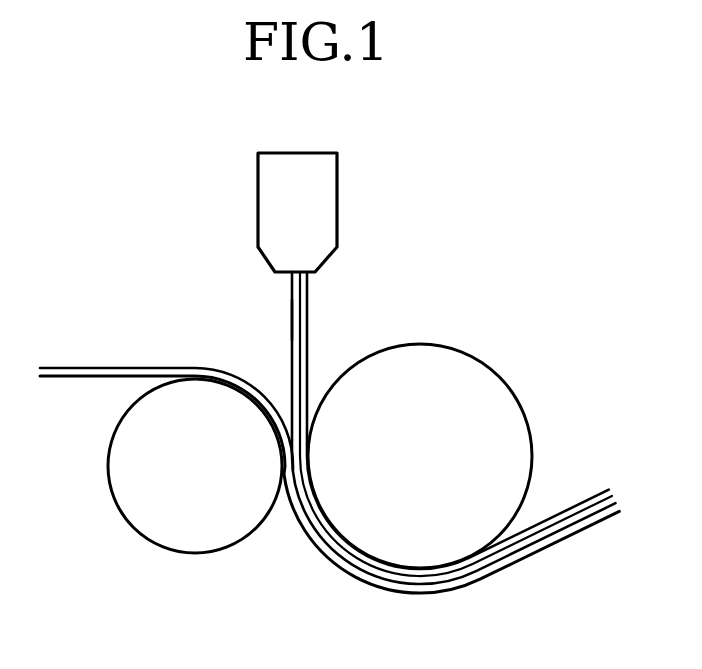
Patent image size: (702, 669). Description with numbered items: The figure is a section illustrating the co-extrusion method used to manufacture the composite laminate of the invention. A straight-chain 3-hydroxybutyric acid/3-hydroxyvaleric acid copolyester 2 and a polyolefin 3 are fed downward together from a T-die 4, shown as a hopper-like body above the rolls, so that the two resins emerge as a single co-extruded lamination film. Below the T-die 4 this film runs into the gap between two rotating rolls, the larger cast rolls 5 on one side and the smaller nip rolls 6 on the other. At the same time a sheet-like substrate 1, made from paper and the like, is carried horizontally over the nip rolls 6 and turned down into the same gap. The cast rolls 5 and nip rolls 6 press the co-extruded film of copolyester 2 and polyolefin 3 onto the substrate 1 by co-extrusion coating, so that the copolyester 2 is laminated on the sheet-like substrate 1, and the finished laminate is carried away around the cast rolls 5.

The sheet-like substrate 1 is at (108, 368).
The straight-chain 3-hydroxybutyric acid/3-hydroxyvaleric acid copolyester 2 is at (292, 319).
The polyolefin 3 is at (307, 293).
The T-die 4 is at (317, 210).
The cast rolls 5 is at (518, 410).
The nip rolls 6 is at (110, 458).